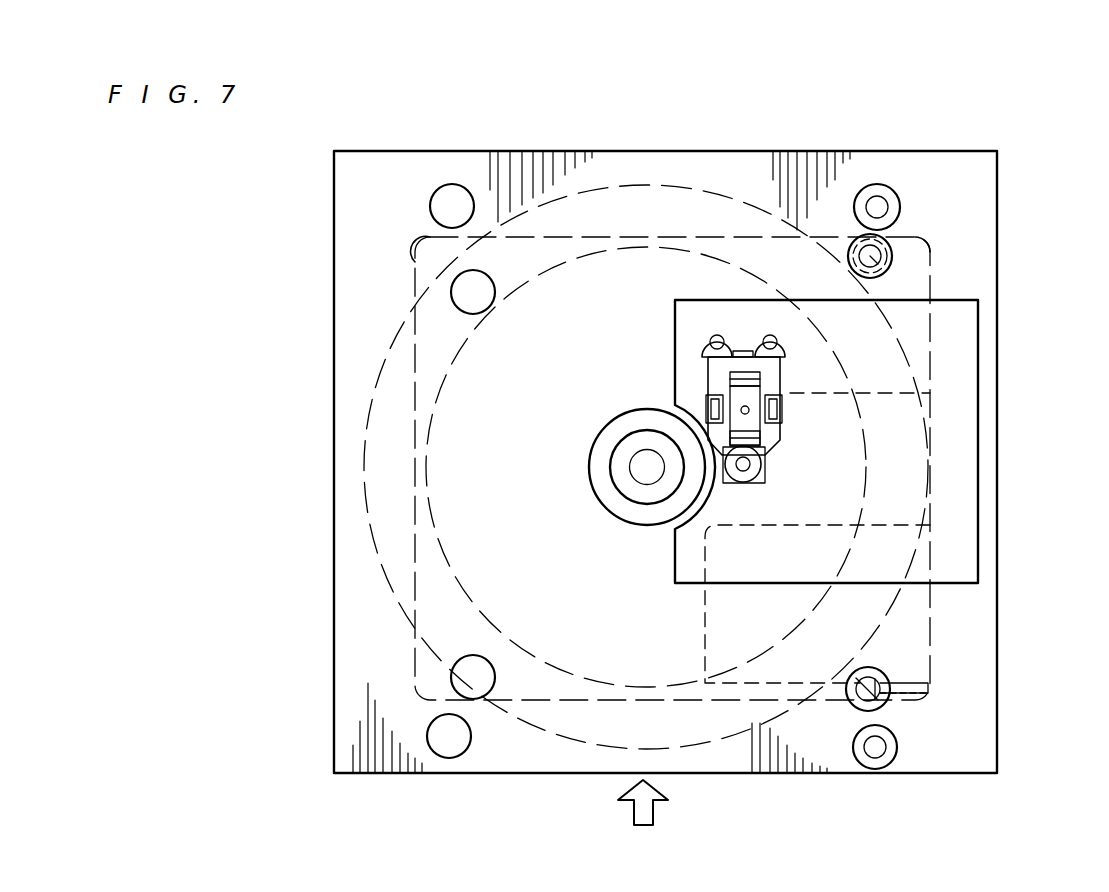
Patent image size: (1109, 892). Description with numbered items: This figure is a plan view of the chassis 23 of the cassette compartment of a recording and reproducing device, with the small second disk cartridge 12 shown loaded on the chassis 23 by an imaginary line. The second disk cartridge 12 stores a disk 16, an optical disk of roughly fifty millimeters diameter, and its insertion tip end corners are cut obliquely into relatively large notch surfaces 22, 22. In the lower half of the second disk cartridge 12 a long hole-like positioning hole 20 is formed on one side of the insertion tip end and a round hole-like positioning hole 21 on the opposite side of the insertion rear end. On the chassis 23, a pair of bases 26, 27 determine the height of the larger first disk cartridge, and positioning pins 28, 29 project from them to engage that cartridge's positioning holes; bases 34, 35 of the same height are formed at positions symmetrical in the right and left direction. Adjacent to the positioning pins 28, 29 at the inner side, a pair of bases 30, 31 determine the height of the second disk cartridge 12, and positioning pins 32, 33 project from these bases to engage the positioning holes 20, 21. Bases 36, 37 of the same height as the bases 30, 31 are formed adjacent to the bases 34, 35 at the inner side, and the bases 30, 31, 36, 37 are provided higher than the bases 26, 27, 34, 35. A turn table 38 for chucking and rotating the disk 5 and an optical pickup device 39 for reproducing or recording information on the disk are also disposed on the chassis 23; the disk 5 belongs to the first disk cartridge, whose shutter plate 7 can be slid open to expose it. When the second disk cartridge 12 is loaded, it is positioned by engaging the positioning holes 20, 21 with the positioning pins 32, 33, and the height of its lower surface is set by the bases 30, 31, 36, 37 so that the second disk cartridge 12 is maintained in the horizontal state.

The disk 5 is at (658, 188).
The shutter plate 7 is at (863, 530).
The second disk cartridge 12 is at (603, 237).
The disk 16 is at (693, 247).
The positioning hole 20 is at (892, 248).
The positioning hole 21 is at (893, 688).
The notch surfaces 22 is at (440, 255).
The chassis 23 is at (334, 452).
The base 26 is at (872, 192).
The base 27 is at (893, 750).
The positioning pin 28 is at (880, 207).
The positioning pin 29 is at (875, 747).
The base 30 is at (893, 259).
The base 31 is at (873, 672).
The positioning pin 32 is at (897, 266).
The positioning pin 33 is at (883, 705).
The base 34 is at (452, 195).
The base 35 is at (452, 746).
The base 36 is at (467, 294).
The base 37 is at (468, 670).
The turn table 38 is at (640, 467).
The optical pickup device 39 is at (765, 438).